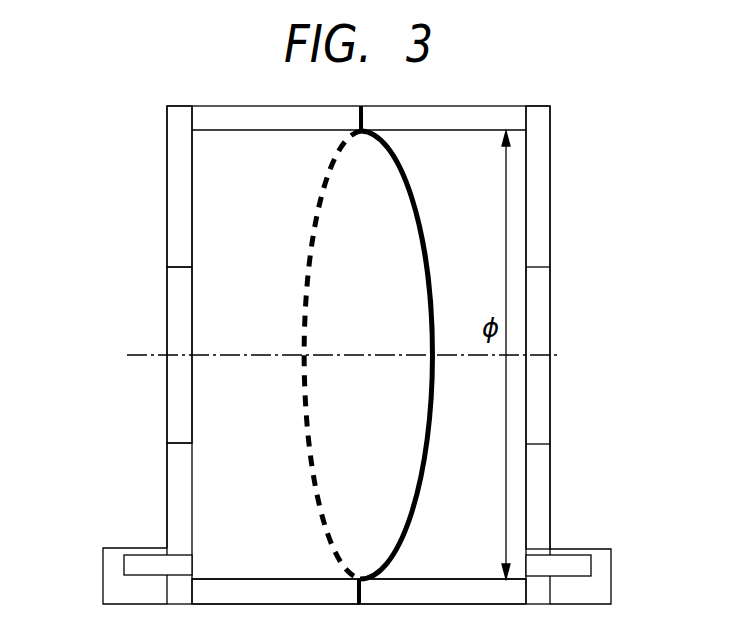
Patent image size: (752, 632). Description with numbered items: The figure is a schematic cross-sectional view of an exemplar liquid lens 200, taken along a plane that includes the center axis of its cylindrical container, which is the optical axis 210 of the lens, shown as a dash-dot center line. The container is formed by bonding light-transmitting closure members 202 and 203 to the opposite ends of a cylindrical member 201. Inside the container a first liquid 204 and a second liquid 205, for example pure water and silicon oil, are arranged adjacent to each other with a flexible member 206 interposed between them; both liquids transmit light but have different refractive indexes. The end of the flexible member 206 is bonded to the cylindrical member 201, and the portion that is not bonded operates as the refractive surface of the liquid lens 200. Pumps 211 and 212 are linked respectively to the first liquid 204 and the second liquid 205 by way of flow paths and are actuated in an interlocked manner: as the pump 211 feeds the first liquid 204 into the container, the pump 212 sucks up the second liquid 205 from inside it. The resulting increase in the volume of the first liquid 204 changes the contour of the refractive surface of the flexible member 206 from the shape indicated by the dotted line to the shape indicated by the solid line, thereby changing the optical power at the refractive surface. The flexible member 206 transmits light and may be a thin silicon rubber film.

The liquid lens 200 is at (120, 99).
The cylindrical member 201 is at (174, 134).
The light-transmitting closure member 202 is at (174, 403).
The light-transmitting closure member 203 is at (544, 392).
The first liquid 204 is at (253, 572).
The second liquid 205 is at (479, 572).
The flexible member 206 is at (427, 247).
The optical axis 210 is at (139, 355).
The pump 211 is at (103, 568).
The pump 212 is at (612, 567).